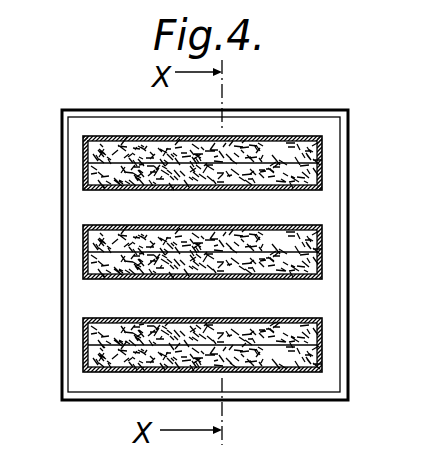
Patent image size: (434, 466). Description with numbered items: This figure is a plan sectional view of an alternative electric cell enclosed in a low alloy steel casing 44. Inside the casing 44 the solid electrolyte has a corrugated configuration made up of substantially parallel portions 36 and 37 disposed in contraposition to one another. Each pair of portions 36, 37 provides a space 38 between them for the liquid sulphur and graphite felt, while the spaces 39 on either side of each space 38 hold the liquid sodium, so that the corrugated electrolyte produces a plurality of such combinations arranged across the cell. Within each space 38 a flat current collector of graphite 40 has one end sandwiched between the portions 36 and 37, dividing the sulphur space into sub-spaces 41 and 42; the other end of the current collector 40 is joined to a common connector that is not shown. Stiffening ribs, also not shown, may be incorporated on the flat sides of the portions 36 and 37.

The parallel portion of solid electrolyte 36 is at (208, 82).
The parallel portion of solid electrolyte 37 is at (171, 190).
The space for liquid sulphur 38 is at (115, 170).
The space for liquid sodium 39 is at (113, 124).
The flat current collector of graphite 40 is at (251, 163).
The sub-space 41 is at (287, 140).
The sub-space 42 is at (253, 163).
The low alloy steel casing 44 is at (112, 113).